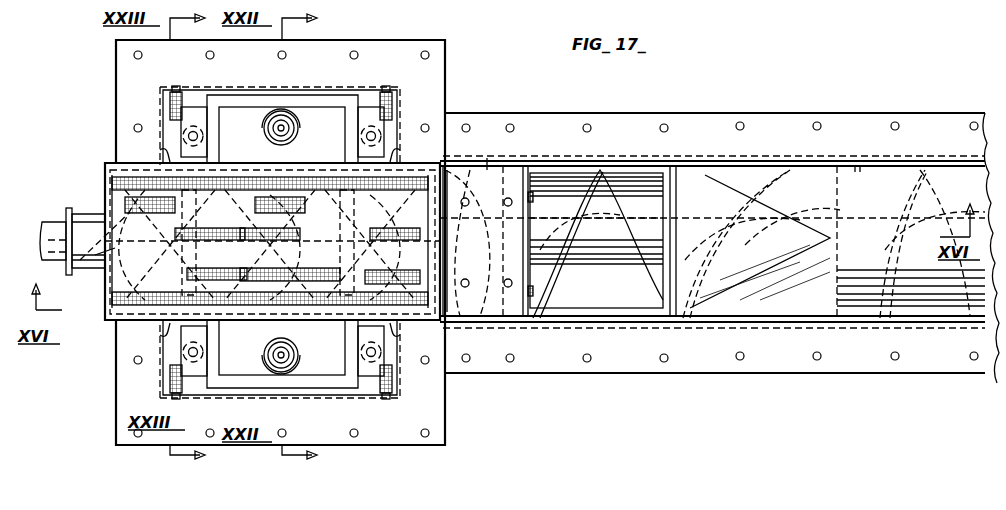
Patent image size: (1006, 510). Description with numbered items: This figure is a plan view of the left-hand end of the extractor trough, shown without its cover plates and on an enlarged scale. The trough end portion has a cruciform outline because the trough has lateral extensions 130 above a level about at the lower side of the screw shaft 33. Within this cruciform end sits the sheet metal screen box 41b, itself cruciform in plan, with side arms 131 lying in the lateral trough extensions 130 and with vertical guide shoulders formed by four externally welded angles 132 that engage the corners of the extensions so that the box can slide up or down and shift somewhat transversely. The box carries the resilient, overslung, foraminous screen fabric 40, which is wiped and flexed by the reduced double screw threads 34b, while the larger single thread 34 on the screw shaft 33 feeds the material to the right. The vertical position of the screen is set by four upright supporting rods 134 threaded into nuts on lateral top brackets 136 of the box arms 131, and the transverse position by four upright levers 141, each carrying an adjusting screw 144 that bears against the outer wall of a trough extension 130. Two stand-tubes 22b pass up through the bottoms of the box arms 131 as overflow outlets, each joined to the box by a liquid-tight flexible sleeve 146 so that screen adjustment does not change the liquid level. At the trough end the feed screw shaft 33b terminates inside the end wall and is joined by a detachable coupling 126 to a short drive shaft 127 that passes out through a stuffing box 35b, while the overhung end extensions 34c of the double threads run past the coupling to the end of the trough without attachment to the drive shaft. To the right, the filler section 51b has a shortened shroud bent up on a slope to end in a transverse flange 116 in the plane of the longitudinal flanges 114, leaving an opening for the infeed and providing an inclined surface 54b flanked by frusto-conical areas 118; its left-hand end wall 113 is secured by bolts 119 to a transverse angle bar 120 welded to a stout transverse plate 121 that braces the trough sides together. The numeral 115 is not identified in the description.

The stand-tube 22b is at (281, 120).
The screw shaft 33 is at (620, 226).
The feed screw shaft 33b is at (272, 245).
The single thread 34 is at (610, 178).
The double screw threads 34b is at (322, 176).
The overhung end extensions 34c is at (112, 262).
The stuffing box 35b is at (85, 212).
The strainer screen fabric 40 is at (232, 176).
The screen box 41b is at (477, 241).
The filler section 51b is at (882, 184).
The inclined surface 54b is at (686, 272).
The left-hand end wall 113 is at (712, 240).
The longitudinal flanges 114 is at (716, 174).
The rail section 115 is at (862, 172).
The transverse flange 116 is at (670, 226).
The frusto-conical areas 118 is at (806, 212).
The bolts 119 is at (534, 198).
The transverse angle bar 120 is at (522, 165).
The transverse plate 121 is at (488, 165).
The coupling 126 is at (152, 318).
The drive shaft 127 is at (52, 228).
The lateral extensions 130 is at (368, 88).
The side arms 131 is at (318, 96).
The angles 132 is at (165, 150).
The supporting rods 134 is at (190, 136).
The lateral top brackets 136 is at (202, 120).
The upright levers 141 is at (172, 108).
The adjusting screw 144 is at (176, 86).
The flexible sleeve 146 is at (258, 150).